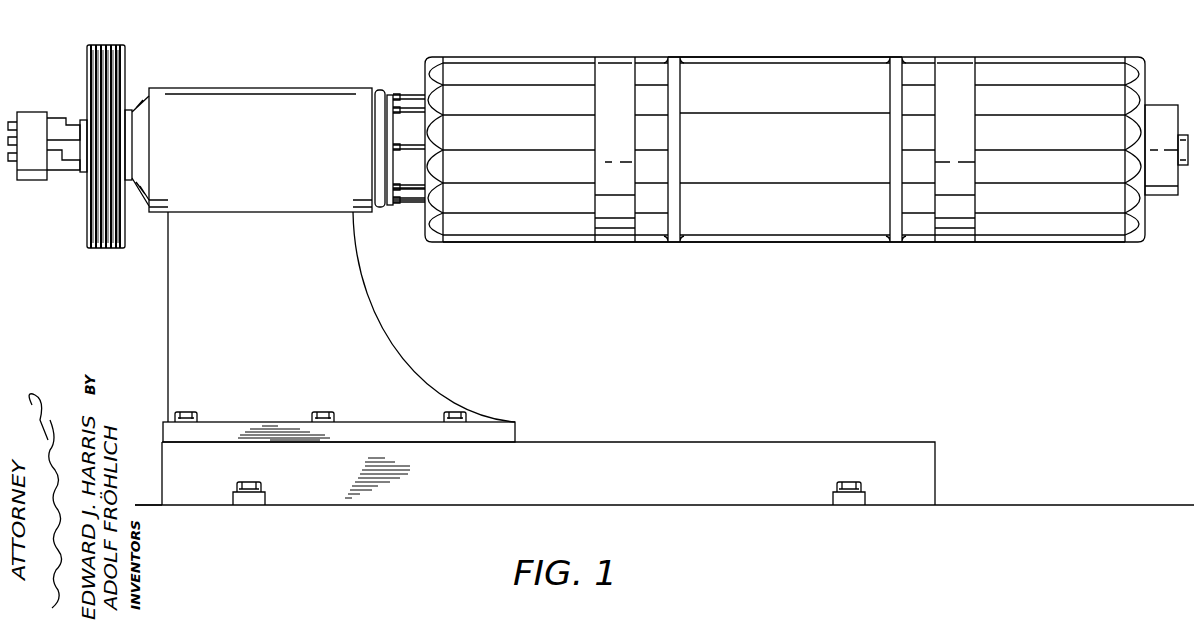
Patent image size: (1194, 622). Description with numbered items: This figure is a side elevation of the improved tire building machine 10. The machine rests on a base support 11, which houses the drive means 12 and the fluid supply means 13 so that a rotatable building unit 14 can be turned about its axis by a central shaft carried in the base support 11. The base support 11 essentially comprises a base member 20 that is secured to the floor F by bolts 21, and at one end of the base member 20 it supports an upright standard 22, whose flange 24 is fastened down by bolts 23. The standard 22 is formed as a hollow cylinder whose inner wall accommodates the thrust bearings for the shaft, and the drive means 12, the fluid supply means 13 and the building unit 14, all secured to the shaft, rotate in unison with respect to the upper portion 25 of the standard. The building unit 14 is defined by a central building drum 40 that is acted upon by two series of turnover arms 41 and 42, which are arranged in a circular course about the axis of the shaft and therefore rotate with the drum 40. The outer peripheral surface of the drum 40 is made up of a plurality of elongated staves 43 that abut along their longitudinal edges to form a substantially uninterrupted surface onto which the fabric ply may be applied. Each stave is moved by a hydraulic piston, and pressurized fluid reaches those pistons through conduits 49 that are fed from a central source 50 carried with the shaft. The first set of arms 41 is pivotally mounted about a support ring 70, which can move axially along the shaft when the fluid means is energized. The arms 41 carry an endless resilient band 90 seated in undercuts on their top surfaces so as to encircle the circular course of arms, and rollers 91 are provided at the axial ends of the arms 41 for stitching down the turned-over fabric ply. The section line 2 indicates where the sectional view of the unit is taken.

The tire building machine 10 is at (785, 158).
The base support 11 is at (155, 456).
The drive means 12 is at (125, 68).
The fluid supply means 13 is at (30, 110).
The rotatable building unit 14 is at (907, 43).
The section line 2— 2 is at (408, 135).
The base member 20 is at (812, 443).
The bolts 21 is at (248, 482).
The upright standard 22 is at (165, 313).
The bolts 23 is at (186, 412).
The flange 24 is at (230, 430).
The upper portion 25 is at (283, 88).
The central building drum 40 is at (832, 248).
The turnover arms 41 is at (1078, 72).
The turnover arms 42 is at (503, 75).
The staves 43 is at (752, 60).
The conduits 49 is at (415, 190).
The central source 50 is at (380, 90).
The support ring 70 is at (1165, 195).
The endless resilient band 90 is at (955, 58).
The rollers 91 is at (413, 105).
The floor F is at (1015, 503).